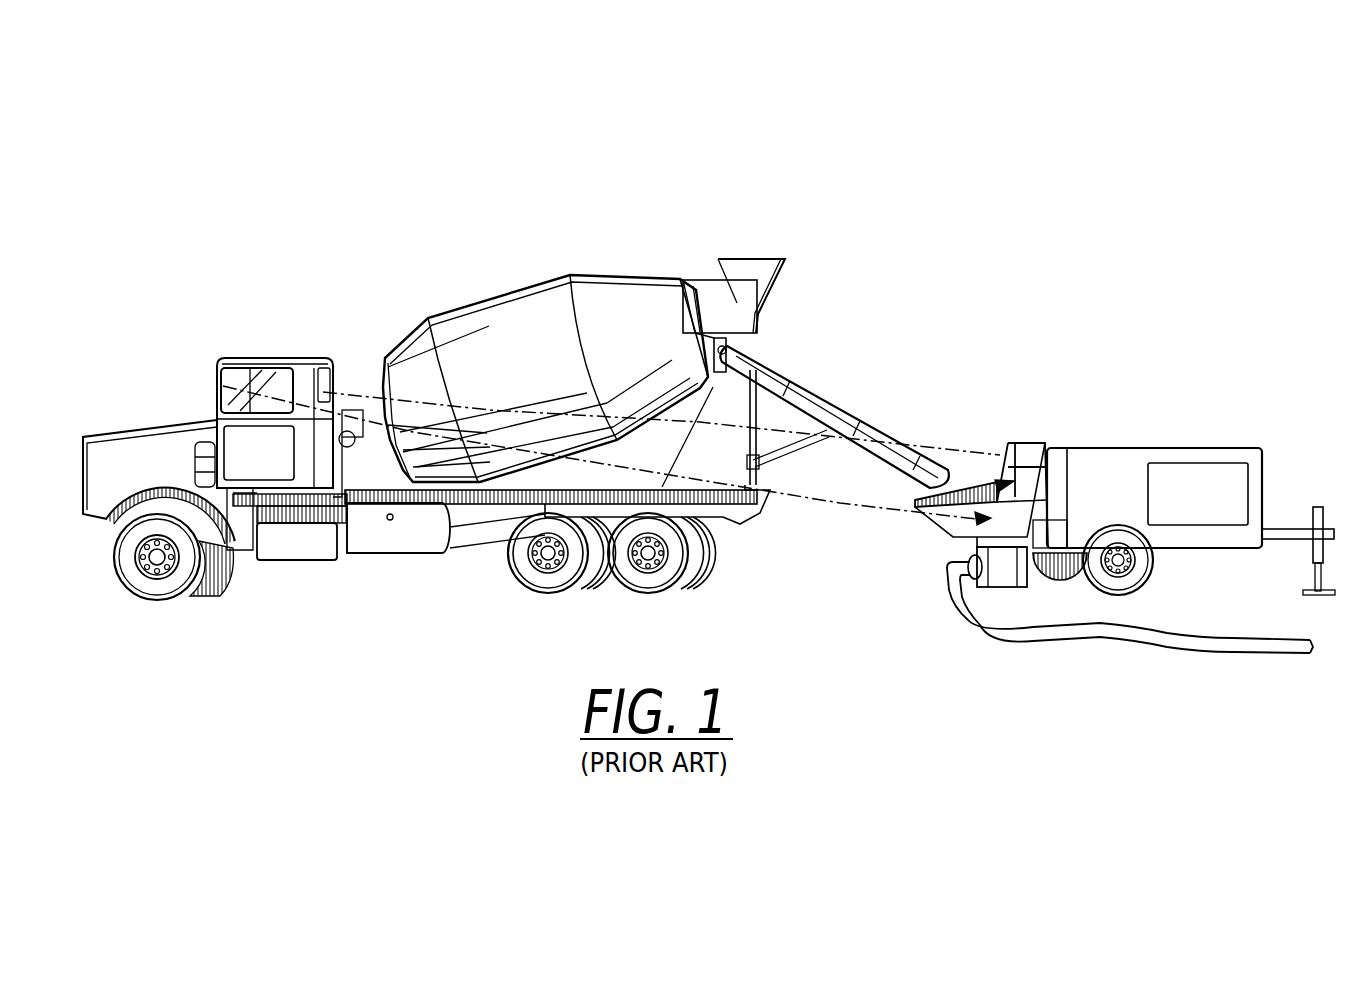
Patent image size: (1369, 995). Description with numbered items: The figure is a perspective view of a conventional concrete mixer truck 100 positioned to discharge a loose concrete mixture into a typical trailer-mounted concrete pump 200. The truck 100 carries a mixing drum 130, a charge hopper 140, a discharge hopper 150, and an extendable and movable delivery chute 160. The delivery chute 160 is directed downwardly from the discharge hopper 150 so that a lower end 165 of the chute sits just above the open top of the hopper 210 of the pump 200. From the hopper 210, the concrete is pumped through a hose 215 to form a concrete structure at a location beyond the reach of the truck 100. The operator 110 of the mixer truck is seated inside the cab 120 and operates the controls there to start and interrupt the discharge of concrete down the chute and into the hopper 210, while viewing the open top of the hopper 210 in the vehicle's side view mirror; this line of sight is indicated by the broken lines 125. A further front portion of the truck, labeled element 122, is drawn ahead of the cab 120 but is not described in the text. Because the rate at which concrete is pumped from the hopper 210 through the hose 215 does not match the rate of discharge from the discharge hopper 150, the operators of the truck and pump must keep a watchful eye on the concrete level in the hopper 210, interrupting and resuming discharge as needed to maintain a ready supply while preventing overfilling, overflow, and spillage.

The concrete mixer truck 100 is at (676, 243).
The operator 110 is at (278, 390).
The cab 120 is at (305, 560).
The hood 122 is at (215, 380).
The broken lines 125 is at (368, 405).
The mixing drum 130 is at (510, 323).
The charge hopper 140 is at (758, 267).
The discharge hopper 150 is at (740, 342).
The delivery chute 160 is at (803, 387).
The lower end 165 is at (1007, 442).
The trailer-mounted concrete pump 200 is at (1118, 446).
The hopper 210 is at (975, 522).
The hose 215 is at (962, 613).